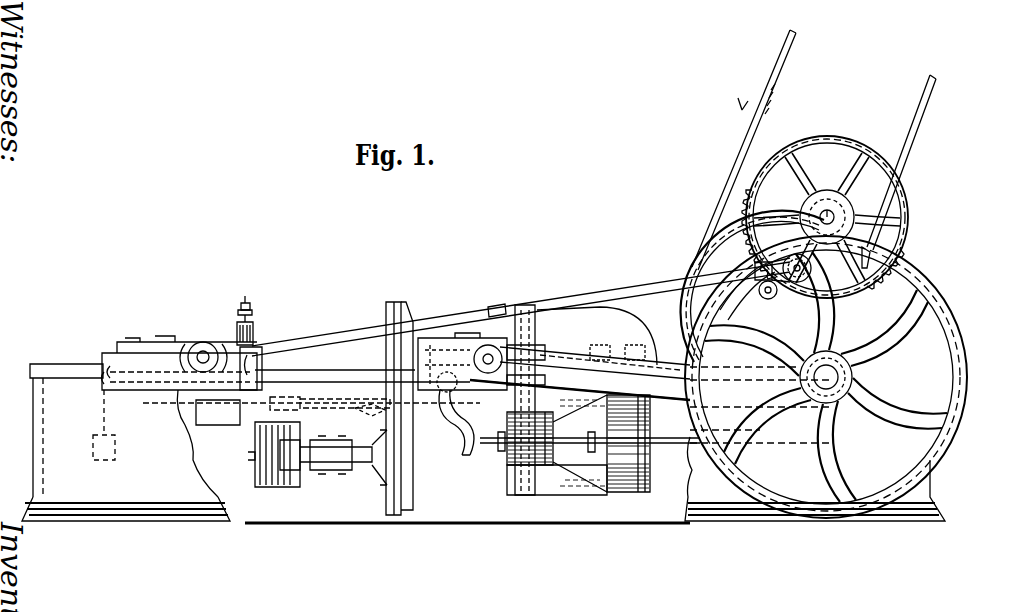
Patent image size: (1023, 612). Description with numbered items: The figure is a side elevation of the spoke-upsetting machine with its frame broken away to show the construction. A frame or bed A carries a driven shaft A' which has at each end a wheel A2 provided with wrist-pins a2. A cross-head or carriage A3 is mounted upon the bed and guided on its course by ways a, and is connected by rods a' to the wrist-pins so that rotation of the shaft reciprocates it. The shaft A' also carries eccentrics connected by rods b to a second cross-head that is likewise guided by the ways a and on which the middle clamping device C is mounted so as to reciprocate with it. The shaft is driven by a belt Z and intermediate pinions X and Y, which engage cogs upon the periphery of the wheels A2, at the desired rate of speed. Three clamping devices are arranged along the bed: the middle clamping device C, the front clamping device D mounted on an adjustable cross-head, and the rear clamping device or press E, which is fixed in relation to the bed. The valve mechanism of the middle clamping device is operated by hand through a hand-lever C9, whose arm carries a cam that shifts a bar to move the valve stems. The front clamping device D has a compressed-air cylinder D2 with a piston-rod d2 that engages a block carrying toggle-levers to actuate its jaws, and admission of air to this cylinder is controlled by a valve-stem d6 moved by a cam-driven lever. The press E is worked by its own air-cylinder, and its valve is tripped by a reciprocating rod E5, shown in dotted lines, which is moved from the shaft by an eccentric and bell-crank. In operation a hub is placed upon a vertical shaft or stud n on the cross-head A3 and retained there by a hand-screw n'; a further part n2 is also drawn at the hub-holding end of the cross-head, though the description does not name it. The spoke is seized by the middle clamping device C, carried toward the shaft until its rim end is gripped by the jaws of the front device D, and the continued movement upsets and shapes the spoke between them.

The frame or bed A is at (483, 443).
The driven shaft A' is at (804, 458).
The wheel A2 is at (957, 418).
The cross-head or carriage A3 is at (259, 348).
The ways a is at (472, 375).
The connecting rod a' is at (521, 309).
The wrist-pin a2 is at (762, 264).
The eccentric rod b is at (590, 361).
The middle clamping device C is at (448, 336).
The hand-lever C9 is at (368, 412).
The front clamping device D is at (537, 327).
The compressed-air cylinder D2 is at (651, 466).
The piston-rod d2 is at (563, 446).
The valve-stem d6 is at (660, 446).
The rear clamping device or press E is at (399, 302).
The reciprocating rod E5 is at (340, 403).
The vertical shaft or stud n is at (232, 327).
The hand-screw n' is at (253, 294).
The pulley n2 is at (203, 344).
The pinion X is at (815, 140).
The pinion Y is at (845, 222).
The belt Z is at (770, 82).